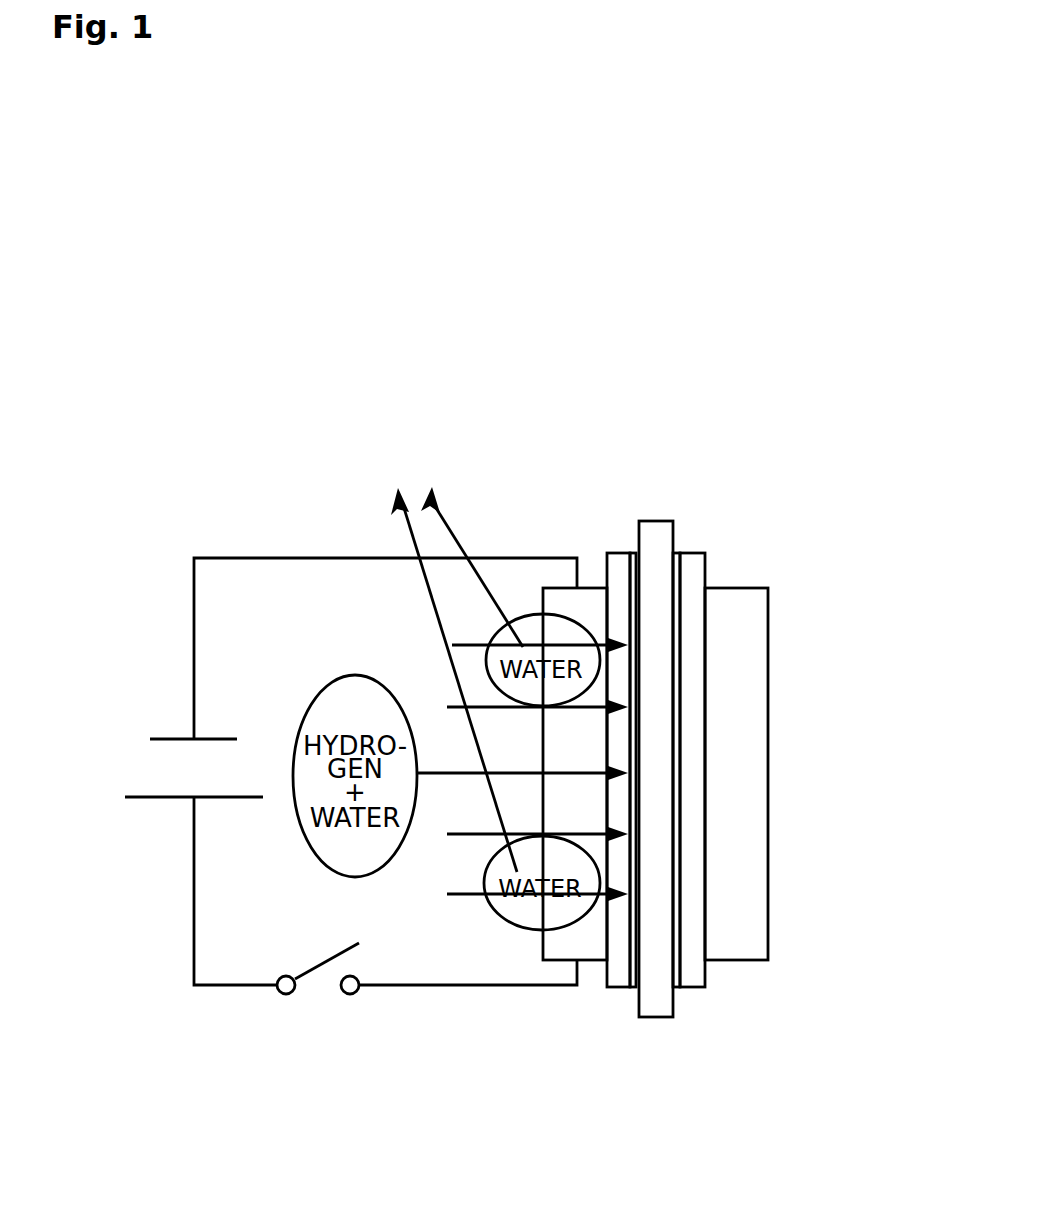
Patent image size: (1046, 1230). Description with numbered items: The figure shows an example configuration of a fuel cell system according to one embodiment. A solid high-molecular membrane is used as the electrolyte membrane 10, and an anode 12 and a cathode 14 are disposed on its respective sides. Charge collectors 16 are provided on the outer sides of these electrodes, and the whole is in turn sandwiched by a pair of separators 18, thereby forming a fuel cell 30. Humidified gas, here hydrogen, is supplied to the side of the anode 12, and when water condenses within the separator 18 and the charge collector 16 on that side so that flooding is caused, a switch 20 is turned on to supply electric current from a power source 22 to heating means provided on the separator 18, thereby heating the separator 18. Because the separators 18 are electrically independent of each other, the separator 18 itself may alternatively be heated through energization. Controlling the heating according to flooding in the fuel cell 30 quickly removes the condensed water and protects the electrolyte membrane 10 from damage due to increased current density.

The electrolyte membrane 10 is at (655, 521).
The anode 12 is at (636, 553).
The cathode 14 is at (676, 553).
The charge collector 16 is at (617, 978).
The separator 18 is at (590, 947).
The switch 20 is at (314, 1000).
The power source 22 is at (127, 780).
The fuel cell 30 is at (733, 777).